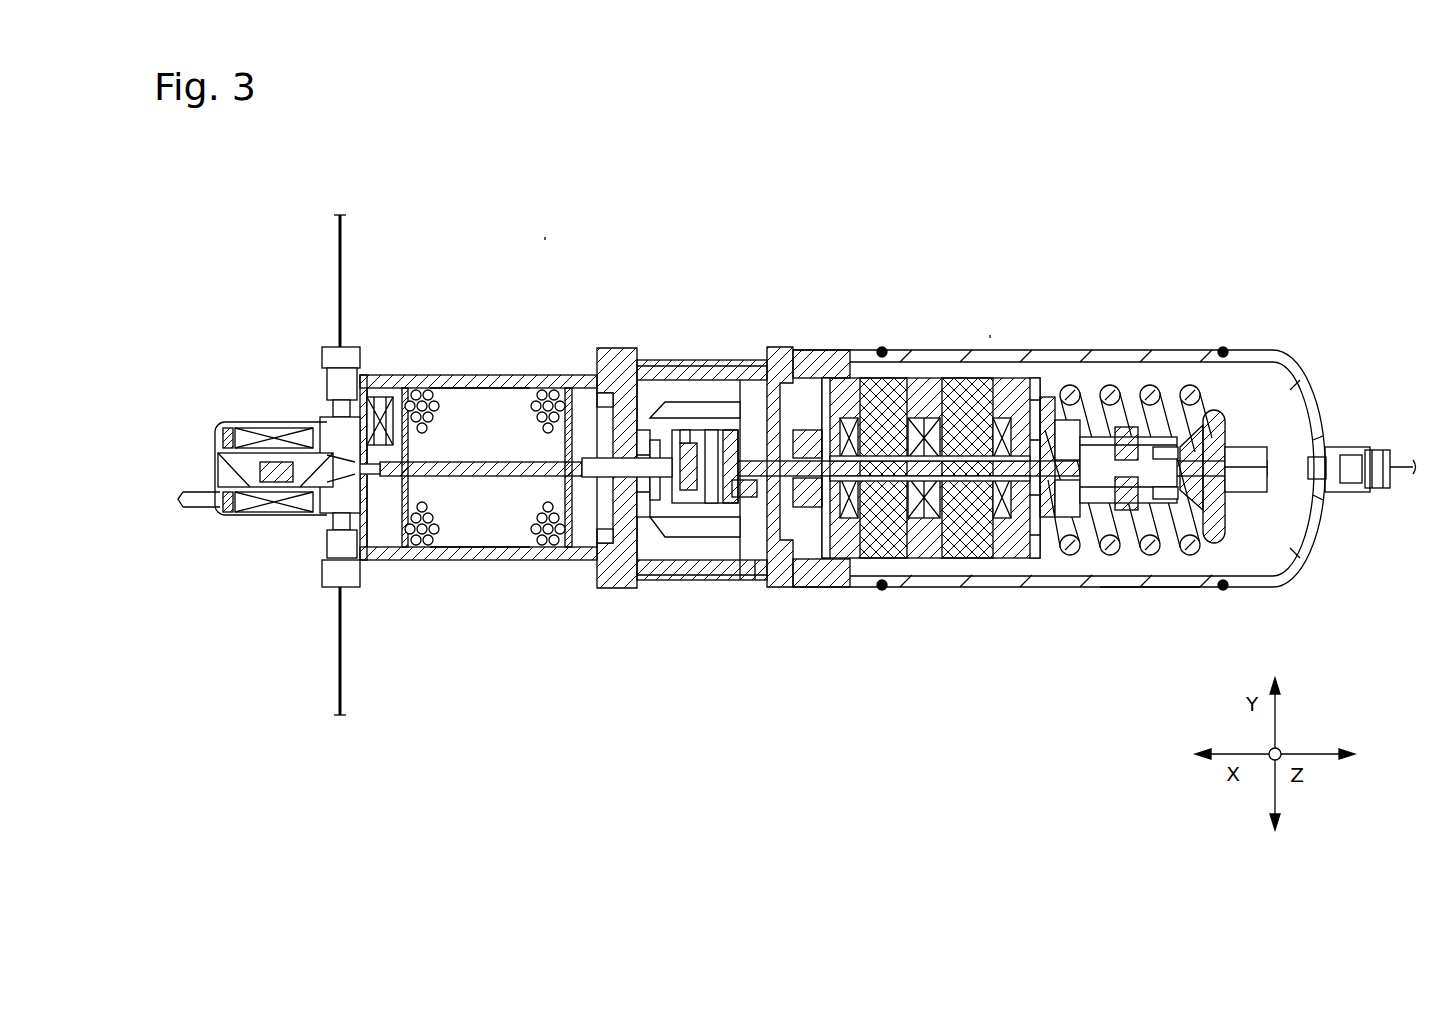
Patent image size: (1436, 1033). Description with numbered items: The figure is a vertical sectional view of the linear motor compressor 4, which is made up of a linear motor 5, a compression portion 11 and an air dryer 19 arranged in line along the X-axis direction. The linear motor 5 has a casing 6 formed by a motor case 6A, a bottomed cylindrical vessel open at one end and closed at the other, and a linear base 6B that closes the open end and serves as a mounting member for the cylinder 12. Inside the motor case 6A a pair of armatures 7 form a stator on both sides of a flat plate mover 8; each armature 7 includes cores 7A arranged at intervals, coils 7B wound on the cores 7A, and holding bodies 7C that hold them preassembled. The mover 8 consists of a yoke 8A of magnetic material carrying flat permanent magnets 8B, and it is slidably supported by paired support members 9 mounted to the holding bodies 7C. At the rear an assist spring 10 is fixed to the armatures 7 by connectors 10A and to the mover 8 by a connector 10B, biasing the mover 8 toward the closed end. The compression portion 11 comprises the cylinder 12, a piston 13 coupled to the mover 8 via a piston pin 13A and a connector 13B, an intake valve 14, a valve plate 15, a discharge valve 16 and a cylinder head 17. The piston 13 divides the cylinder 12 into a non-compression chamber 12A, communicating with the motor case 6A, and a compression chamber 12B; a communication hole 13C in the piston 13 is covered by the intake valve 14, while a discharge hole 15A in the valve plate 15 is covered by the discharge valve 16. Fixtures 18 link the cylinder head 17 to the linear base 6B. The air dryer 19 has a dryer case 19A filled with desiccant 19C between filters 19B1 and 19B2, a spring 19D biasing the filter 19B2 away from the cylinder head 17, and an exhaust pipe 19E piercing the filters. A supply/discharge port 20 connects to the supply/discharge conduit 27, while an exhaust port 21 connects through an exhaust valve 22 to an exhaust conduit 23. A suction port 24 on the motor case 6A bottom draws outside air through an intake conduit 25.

The linear motor compressor 4 is at (545, 236).
The linear motor 5 is at (990, 334).
The casing 6 is at (1100, 350).
The motor case 6A is at (1148, 590).
The linear base 6B is at (795, 590).
The armature 7 is at (930, 464).
The core 7A is at (888, 348).
The coil 7B is at (853, 348).
The holding body 7C is at (1012, 348).
The mover 8 is at (1001, 463).
The yoke 8A is at (1098, 590).
The permanent magnet 8B is at (960, 348).
The support member 9 is at (825, 348).
The spring 10 is at (1192, 590).
The connector 10A is at (1052, 350).
The connector 10B is at (1203, 350).
The compression portion 11 is at (700, 348).
The cylinder 12 is at (715, 348).
The non-compression chamber 12A is at (762, 348).
The compression chamber 12B is at (655, 400).
The piston 13 is at (715, 493).
The piston pin 13A is at (708, 520).
The connector 13B is at (758, 560).
The communication hole 13C is at (672, 400).
The intake valve 14 is at (680, 503).
The valve plate 15 is at (630, 520).
The discharge hole 15A is at (655, 520).
The discharge valve 16 is at (600, 555).
The cylinder head 17 is at (620, 345).
The fixture 18 is at (740, 348).
The air dryer 19 is at (512, 458).
The dryer case 19A is at (470, 386).
The filter 19B1 is at (410, 560).
The filter 19B2 is at (567, 548).
The desiccant 19C is at (420, 392).
The spring 19D is at (602, 390).
The exhaust pipe 19E is at (460, 492).
The supply/discharge port 20 is at (328, 346).
The exhaust port 21 is at (348, 595).
The exhaust valve 22 is at (275, 422).
The exhaust conduit 23 is at (340, 608).
The suction port 24 is at (1348, 492).
The intake conduit 25 is at (1410, 472).
The supply/discharge conduit 27 is at (343, 305).